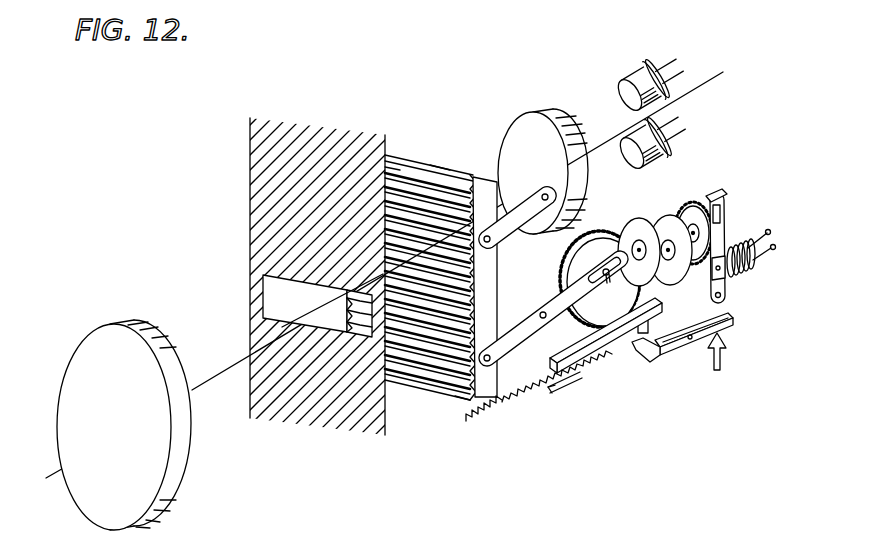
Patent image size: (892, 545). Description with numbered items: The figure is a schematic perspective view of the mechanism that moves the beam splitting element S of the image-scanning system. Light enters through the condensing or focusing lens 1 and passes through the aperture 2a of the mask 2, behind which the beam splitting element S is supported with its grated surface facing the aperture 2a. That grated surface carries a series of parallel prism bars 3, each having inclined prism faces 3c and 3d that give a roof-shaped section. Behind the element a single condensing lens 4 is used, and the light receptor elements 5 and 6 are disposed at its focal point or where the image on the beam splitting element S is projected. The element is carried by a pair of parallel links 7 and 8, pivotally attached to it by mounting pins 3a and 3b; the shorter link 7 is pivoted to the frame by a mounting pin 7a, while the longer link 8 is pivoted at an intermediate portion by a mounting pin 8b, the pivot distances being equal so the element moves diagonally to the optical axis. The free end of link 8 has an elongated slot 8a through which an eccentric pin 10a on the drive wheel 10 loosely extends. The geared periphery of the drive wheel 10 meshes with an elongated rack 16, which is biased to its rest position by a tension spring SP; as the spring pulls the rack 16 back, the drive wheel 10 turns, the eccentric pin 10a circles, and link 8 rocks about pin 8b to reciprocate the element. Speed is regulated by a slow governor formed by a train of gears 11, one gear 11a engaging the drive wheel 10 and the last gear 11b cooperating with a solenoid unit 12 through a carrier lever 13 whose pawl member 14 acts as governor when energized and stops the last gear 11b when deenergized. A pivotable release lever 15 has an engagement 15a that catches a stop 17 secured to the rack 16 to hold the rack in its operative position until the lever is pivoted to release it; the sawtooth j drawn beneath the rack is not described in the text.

The condensing or focusing lens 1 is at (143, 324).
The mask 2 is at (252, 170).
The aperture 2a is at (265, 296).
The prism bars 3 is at (413, 170).
The mounting pin 3a is at (494, 244).
The mounting pin 3b is at (478, 398).
The prism face 3c is at (440, 168).
The prism face 3d is at (396, 175).
The beam splitting element S is at (488, 190).
The condensing lens 4 is at (567, 112).
The light receptor element 5 is at (628, 80).
The light receptor element 6 is at (634, 166).
The link 7 is at (520, 210).
The mounting pin 7a is at (546, 190).
The link 8 is at (522, 338).
The elongated slot 8a is at (598, 290).
The mounting pin 8b is at (543, 312).
The drive wheel 10 is at (598, 238).
The eccentric pin 10a is at (603, 284).
The train of gears 11 is at (664, 272).
The gear 11a is at (670, 216).
The last gear 11b is at (700, 206).
The solenoid unit 12 is at (744, 270).
The carrier lever 13 is at (726, 234).
The pawl member 14 is at (723, 197).
The release lever 15 is at (670, 352).
The engagement 15a is at (640, 356).
The rack 16 is at (550, 366).
The stop 17 is at (728, 314).
The sawtooth rack j is at (588, 388).
The tension spring SP is at (488, 420).